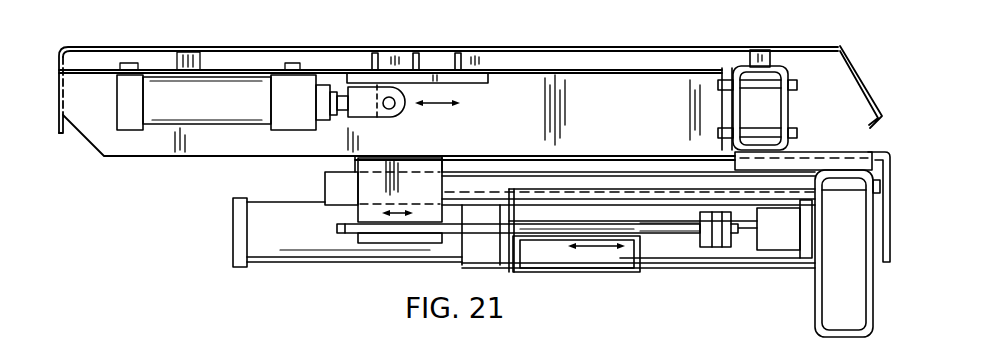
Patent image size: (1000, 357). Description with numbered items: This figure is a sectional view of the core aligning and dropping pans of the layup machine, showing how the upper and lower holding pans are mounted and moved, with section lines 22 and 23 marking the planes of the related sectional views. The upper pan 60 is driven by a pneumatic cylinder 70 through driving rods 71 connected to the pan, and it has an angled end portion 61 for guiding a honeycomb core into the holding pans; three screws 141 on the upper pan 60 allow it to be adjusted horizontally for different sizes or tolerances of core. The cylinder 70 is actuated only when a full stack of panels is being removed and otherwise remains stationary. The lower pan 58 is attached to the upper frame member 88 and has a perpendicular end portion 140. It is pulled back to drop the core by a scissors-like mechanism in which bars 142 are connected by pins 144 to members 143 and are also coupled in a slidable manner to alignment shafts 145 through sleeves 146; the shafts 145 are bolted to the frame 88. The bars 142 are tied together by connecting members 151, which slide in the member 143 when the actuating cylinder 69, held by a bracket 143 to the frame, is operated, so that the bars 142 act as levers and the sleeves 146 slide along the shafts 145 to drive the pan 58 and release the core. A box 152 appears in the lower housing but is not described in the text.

The section line 22- 22 is at (110, 2).
The section line 23- 23 is at (201, 156).
The lower pan 58 is at (857, 152).
The upper pan 60 is at (777, 47).
The angled end portion 61 is at (855, 50).
The cylinder 69 is at (305, 247).
The pneumatic cylinder 70 is at (253, 118).
The rods 71 is at (340, 118).
The upper frame member 88 is at (818, 316).
The perpendicular end portion 140 is at (890, 252).
The screws 141 is at (447, 55).
The bars 142 is at (634, 229).
The members 143 is at (680, 270).
The pins 144 is at (716, 248).
The alignment shafts 145 is at (477, 178).
The sleeves 146 is at (383, 243).
The connecting members 151 is at (700, 238).
The housing box 152 is at (562, 236).